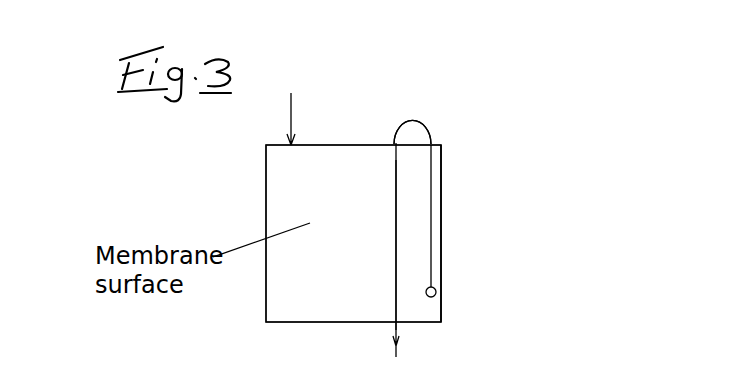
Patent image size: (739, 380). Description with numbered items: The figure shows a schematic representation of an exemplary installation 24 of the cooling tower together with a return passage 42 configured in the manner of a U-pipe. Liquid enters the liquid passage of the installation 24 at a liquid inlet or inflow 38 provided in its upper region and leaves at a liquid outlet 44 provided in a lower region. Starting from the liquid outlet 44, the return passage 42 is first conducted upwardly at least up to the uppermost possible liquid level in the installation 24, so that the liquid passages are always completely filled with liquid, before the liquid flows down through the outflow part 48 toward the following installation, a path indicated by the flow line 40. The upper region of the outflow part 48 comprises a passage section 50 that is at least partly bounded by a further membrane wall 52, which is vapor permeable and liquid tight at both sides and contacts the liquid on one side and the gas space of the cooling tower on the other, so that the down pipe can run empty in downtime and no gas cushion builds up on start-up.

The installation 24 is at (398, 83).
The liquid inlet 38 is at (291, 104).
The flow line 40 is at (400, 342).
The return passage 42 is at (442, 189).
The liquid outlet 44 is at (436, 291).
The outflow part 48 is at (397, 233).
The passage section 50 is at (403, 148).
The further membrane wall 52 is at (478, 125).